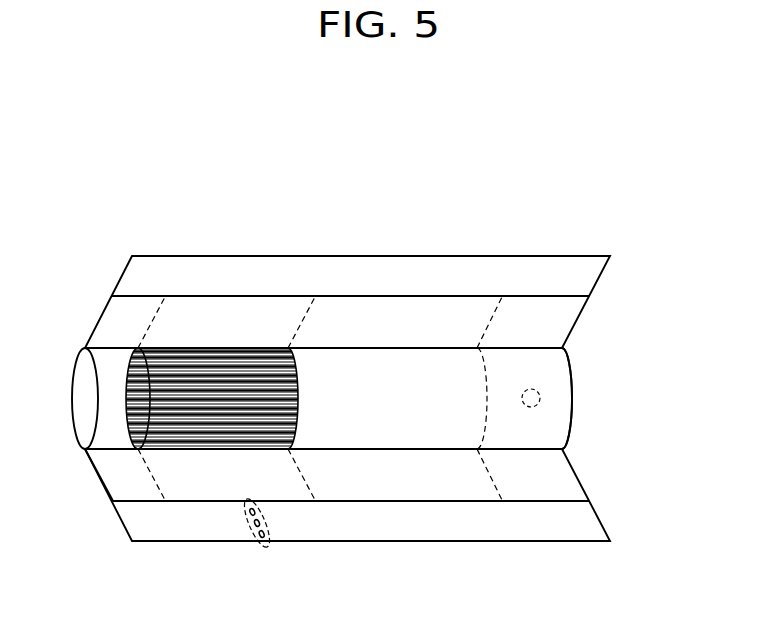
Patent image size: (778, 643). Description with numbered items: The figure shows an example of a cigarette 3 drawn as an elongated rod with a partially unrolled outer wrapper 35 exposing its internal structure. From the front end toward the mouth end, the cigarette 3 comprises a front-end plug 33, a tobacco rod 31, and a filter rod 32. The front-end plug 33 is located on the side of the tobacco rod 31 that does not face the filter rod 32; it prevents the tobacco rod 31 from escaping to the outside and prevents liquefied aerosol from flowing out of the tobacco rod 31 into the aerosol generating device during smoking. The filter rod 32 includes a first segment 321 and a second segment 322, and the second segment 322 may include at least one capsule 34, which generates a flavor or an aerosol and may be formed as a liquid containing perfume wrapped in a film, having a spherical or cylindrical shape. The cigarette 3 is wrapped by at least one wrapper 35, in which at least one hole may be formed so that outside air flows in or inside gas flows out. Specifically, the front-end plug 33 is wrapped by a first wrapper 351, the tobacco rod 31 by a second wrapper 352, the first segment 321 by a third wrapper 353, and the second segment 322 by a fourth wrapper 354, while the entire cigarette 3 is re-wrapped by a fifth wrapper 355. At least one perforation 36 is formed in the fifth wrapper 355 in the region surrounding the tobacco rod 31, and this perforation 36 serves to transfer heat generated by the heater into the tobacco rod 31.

The cigarette 3 is at (606, 223).
The tobacco rod 31 is at (207, 372).
The filter rod 32 is at (427, 205).
The first segment 321 is at (438, 373).
The second segment 322 is at (523, 365).
The front-end plug 33 is at (115, 360).
The capsule 34 is at (540, 399).
The wrapper 35 is at (345, 428).
The first wrapper 351 is at (115, 478).
The second wrapper 352 is at (197, 485).
The third wrapper 353 is at (398, 483).
The fourth wrapper 354 is at (522, 483).
The fifth wrapper 355 is at (333, 523).
The perforation 36 is at (253, 536).